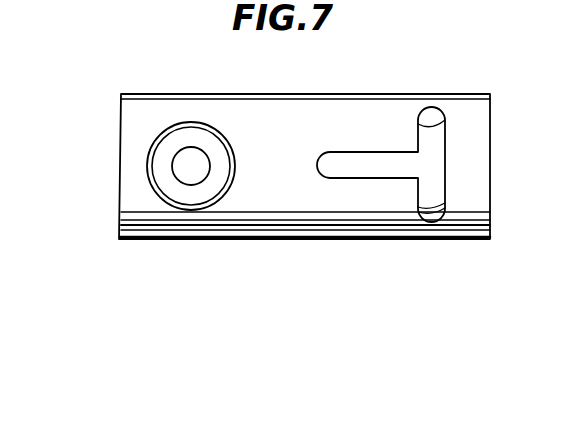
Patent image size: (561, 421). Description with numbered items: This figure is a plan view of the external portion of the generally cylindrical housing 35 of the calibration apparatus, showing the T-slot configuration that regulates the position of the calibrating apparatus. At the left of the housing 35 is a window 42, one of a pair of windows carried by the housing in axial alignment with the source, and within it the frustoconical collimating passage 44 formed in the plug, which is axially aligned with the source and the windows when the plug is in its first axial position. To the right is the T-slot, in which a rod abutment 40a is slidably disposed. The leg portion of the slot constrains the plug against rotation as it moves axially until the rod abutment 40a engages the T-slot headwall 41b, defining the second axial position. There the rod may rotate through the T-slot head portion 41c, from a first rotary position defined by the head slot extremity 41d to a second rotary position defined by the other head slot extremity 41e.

The cylindrical housing 35 is at (266, 113).
The window 42 is at (207, 121).
The frustoconical collimating passage 44 is at (171, 180).
The rod abutment end 40a is at (330, 166).
The T-slot headwall 41b is at (445, 148).
The T-slot head portion 41c is at (436, 180).
The head slot extremity 41d is at (430, 110).
The head slot extremity 41e is at (436, 214).